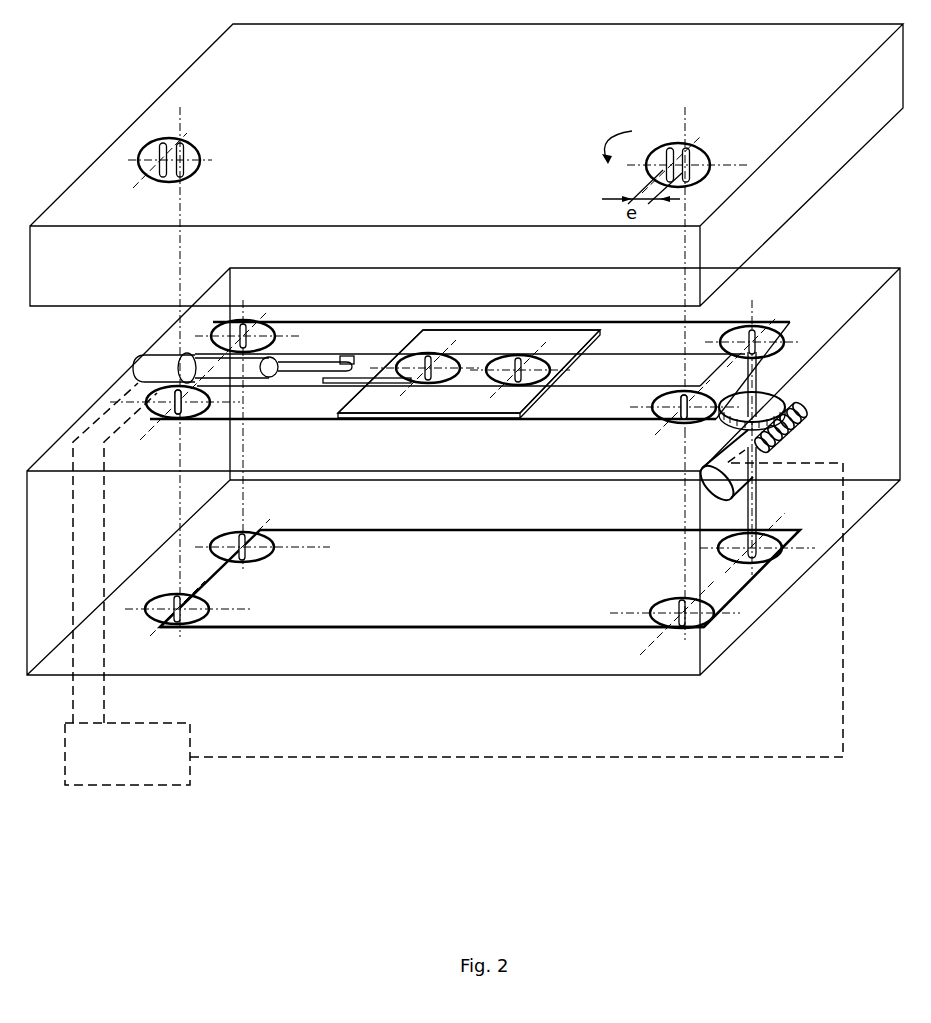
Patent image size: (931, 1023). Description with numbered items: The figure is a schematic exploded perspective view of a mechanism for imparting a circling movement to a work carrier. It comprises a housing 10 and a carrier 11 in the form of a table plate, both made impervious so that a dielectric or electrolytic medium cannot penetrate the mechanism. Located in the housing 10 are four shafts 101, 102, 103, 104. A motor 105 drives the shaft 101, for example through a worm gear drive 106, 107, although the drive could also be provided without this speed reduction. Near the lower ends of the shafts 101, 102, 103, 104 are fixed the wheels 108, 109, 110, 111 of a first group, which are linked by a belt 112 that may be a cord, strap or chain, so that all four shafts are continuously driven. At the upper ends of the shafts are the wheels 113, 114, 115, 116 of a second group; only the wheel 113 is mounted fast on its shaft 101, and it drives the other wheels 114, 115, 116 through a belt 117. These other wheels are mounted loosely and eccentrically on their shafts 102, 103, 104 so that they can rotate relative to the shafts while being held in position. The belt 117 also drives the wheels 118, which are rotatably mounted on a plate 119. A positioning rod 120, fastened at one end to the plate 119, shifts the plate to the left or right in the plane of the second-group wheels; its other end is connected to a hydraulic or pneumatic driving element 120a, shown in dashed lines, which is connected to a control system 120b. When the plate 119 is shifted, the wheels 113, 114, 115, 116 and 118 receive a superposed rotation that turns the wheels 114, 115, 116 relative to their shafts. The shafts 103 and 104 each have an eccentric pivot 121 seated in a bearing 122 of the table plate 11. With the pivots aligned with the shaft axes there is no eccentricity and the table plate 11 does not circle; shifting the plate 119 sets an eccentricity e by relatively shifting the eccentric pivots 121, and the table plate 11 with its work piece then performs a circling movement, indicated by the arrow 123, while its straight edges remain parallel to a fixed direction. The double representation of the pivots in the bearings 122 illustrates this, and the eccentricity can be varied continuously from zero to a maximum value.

The housing 10 is at (416, 676).
The carrier 11 is at (797, 178).
The shaft 101 is at (757, 510).
The shaft 102 is at (240, 458).
The shaft 103 is at (178, 517).
The shaft 104 is at (685, 520).
The motor 105 is at (717, 467).
The worm gear drive 106 is at (797, 415).
The worm gear drive 107 is at (763, 400).
The wheel 108 is at (770, 545).
The wheel 109 is at (253, 550).
The wheel 110 is at (198, 603).
The wheel 111 is at (675, 608).
The belt 112 is at (455, 627).
The wheel 113 is at (770, 333).
The wheel 114 is at (262, 333).
The wheel 115 is at (163, 405).
The wheel 116 is at (655, 415).
The belt 117 is at (547, 422).
The wheels 118 is at (500, 372).
The plate 119 is at (500, 407).
The positioning rod 120 is at (147, 367).
The hydraulic or pneumatic driving element 120a is at (240, 367).
The control system 120b is at (192, 728).
The eccentric pivot 121 is at (177, 400).
The bearing 122 is at (200, 157).
The arrow 123 is at (602, 146).